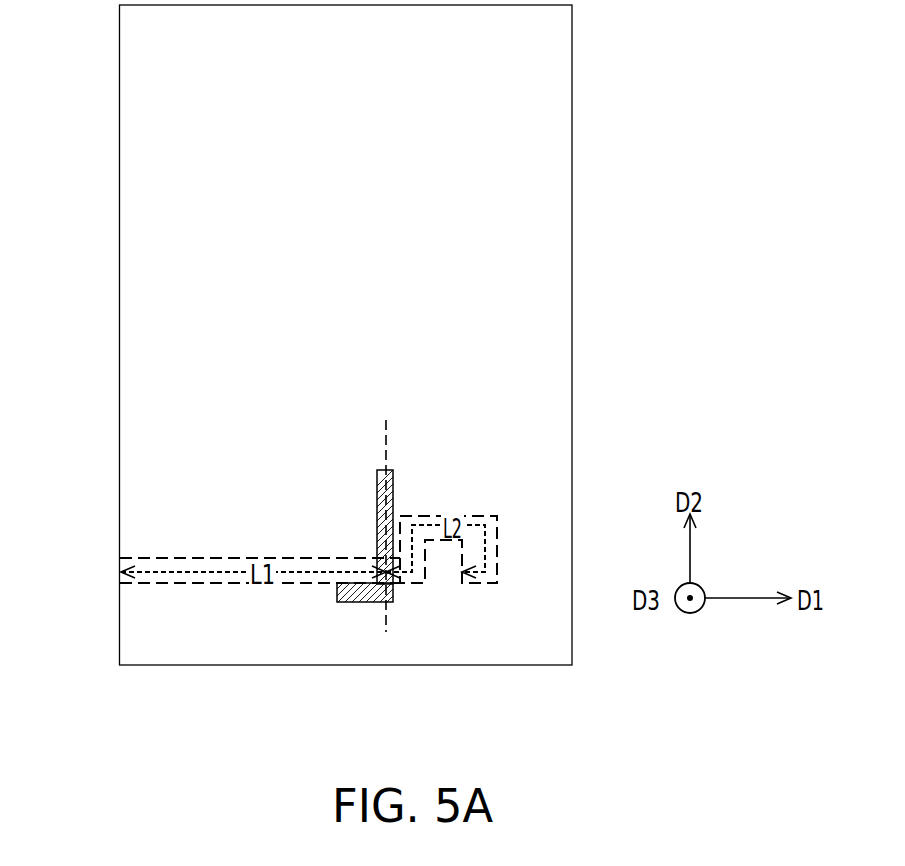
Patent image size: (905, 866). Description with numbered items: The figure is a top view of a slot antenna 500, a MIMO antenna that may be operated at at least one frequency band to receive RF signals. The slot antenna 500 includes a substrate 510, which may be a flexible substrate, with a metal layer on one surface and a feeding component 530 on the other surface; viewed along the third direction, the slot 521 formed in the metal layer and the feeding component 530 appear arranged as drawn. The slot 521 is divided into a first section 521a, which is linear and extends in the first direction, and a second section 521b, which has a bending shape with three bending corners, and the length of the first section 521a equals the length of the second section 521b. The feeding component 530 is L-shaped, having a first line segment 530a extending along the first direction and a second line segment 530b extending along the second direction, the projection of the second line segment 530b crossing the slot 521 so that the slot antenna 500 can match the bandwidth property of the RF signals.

The slot antenna 500 is at (748, 737).
The substrate 510 is at (119, 66).
The slot 521 is at (282, 517).
The first section 521a is at (206, 558).
The second section 521b is at (452, 514).
The feeding component 530 is at (334, 546).
The first line segment 530a is at (358, 602).
The second line segment 530b is at (378, 501).